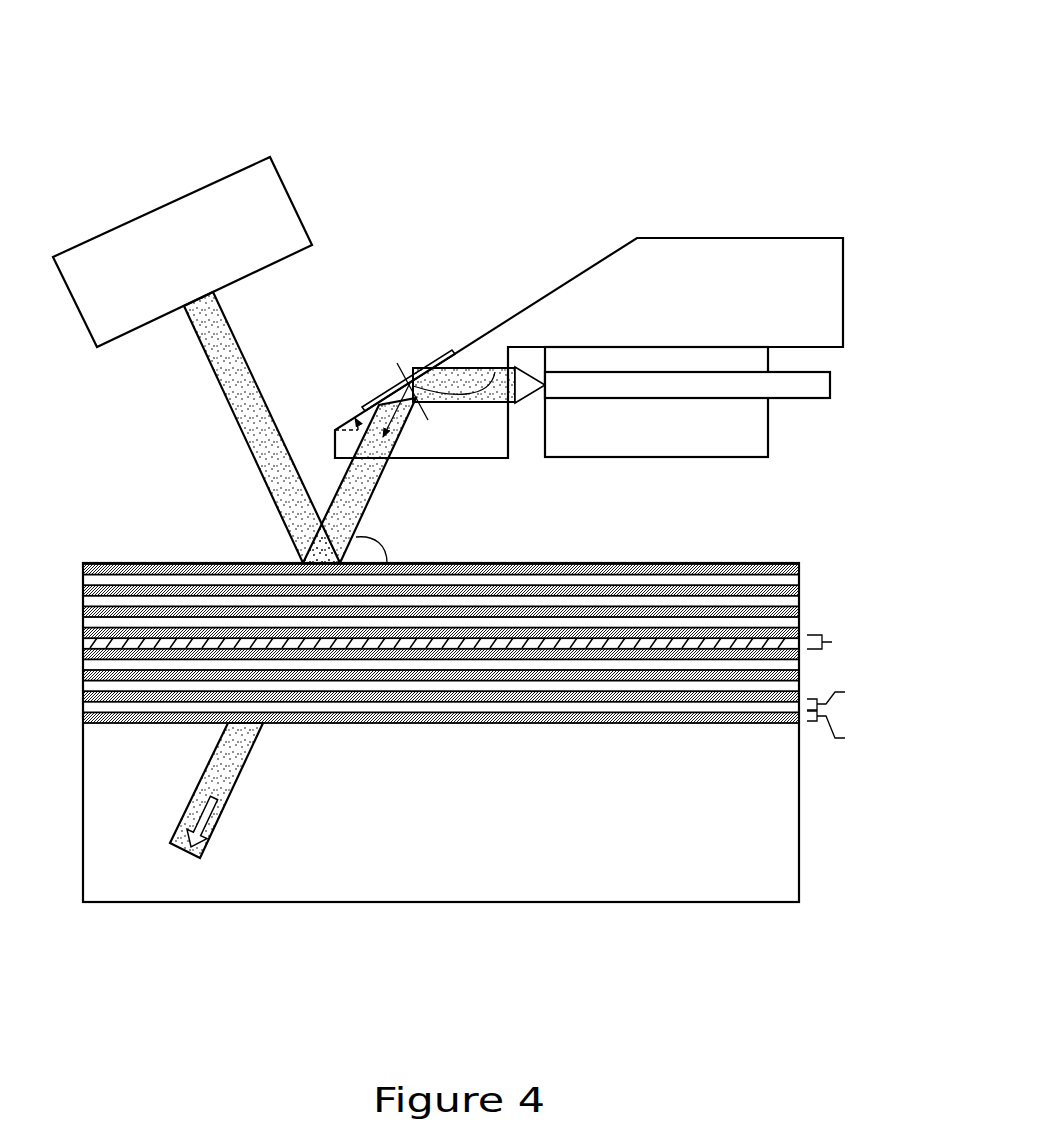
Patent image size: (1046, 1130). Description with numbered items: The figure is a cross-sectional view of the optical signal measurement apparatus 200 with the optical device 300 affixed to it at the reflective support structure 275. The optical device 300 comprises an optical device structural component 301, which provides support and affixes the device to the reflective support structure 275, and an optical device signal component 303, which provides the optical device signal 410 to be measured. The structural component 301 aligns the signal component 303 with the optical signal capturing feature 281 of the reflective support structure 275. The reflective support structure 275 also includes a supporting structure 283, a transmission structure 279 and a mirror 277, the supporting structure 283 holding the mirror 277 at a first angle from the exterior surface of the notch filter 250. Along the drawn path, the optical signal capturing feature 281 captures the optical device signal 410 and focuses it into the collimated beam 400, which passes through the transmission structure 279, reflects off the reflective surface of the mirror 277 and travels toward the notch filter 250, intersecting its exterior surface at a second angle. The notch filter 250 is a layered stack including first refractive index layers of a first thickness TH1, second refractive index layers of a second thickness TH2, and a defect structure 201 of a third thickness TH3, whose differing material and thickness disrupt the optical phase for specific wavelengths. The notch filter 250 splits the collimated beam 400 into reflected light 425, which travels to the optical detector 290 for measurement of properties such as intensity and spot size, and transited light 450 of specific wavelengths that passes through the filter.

The optical signal measurement apparatus 200 is at (75, 30).
The optical detector 290 is at (312, 189).
The reflected light 425 is at (247, 417).
The collimated beam 400 is at (354, 504).
The reflective support structure 275 is at (620, 305).
The supporting structure 283 is at (684, 309).
The transmission structure 279 is at (492, 447).
The mirror 277 is at (400, 388).
The optical device signal 410 is at (480, 369).
The optical signal capturing feature 281 is at (513, 408).
The optical device 300 is at (733, 385).
The optical device structural component 301 is at (684, 444).
The optical device signal component 303 is at (797, 398).
The notch filter 250 is at (457, 692).
The defect structure 201 is at (90, 641).
The transited light 450 is at (200, 780).
The first thickness TH1 is at (855, 732).
The second thickness TH2 is at (855, 691).
The third thickness TH3 is at (855, 641).